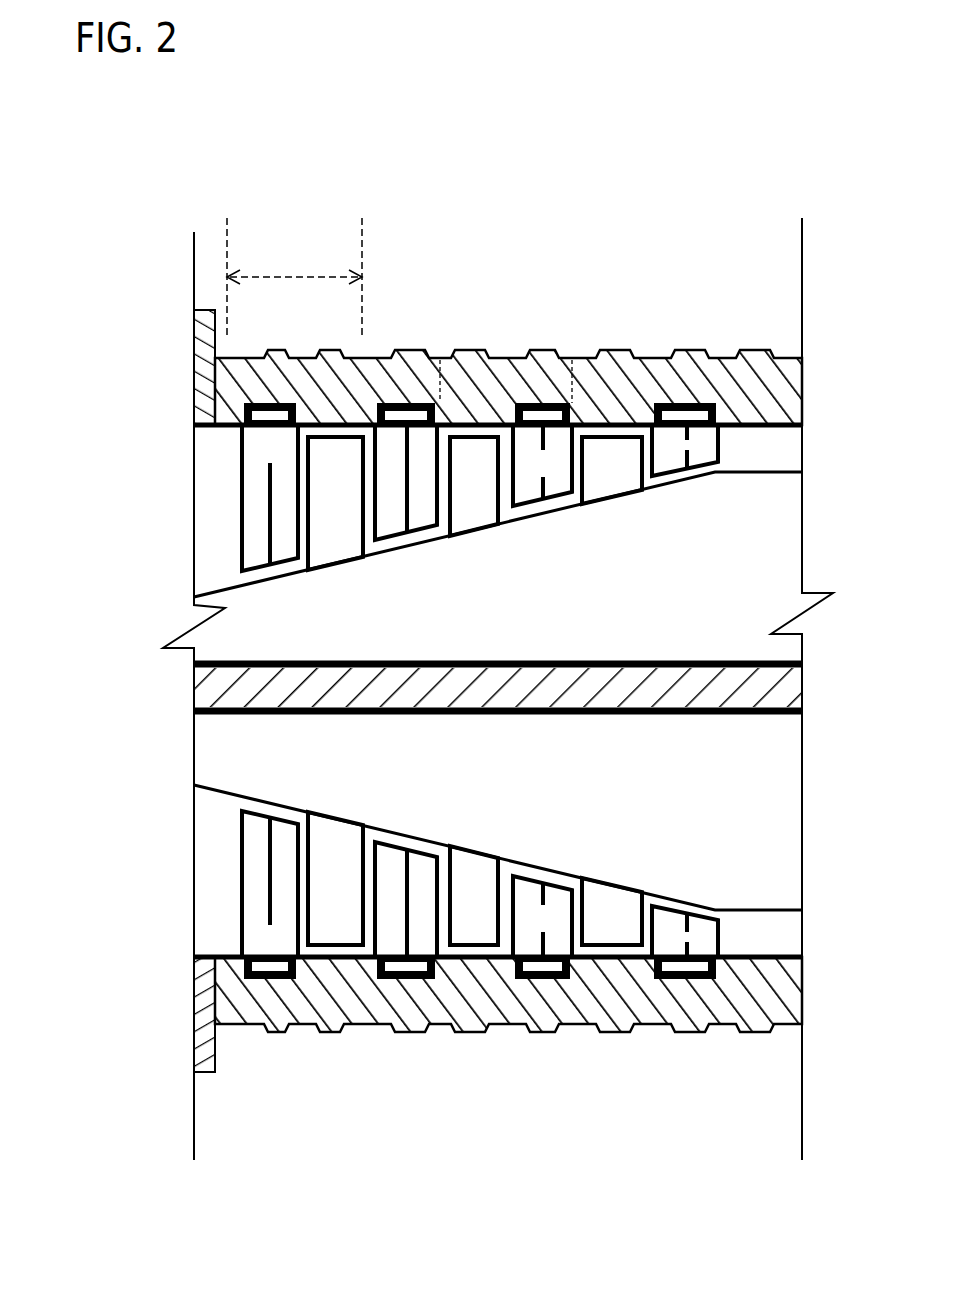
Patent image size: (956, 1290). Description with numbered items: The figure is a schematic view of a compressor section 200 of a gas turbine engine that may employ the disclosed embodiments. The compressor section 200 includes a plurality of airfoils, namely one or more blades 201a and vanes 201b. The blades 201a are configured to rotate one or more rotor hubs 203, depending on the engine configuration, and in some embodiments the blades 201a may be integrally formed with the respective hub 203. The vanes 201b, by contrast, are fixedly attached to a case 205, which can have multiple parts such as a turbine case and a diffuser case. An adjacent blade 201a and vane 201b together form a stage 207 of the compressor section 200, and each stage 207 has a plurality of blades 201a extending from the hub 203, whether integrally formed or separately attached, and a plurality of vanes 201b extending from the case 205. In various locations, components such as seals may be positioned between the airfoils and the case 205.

The compressor section 200 is at (128, 238).
The blades 201a is at (337, 545).
The vanes 201b is at (244, 515).
The rotor hub 203 is at (240, 637).
The case 205 is at (470, 382).
The stage 207 is at (294, 276).